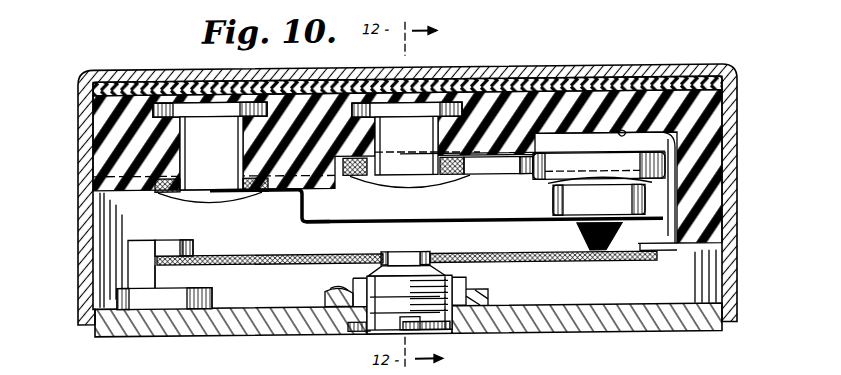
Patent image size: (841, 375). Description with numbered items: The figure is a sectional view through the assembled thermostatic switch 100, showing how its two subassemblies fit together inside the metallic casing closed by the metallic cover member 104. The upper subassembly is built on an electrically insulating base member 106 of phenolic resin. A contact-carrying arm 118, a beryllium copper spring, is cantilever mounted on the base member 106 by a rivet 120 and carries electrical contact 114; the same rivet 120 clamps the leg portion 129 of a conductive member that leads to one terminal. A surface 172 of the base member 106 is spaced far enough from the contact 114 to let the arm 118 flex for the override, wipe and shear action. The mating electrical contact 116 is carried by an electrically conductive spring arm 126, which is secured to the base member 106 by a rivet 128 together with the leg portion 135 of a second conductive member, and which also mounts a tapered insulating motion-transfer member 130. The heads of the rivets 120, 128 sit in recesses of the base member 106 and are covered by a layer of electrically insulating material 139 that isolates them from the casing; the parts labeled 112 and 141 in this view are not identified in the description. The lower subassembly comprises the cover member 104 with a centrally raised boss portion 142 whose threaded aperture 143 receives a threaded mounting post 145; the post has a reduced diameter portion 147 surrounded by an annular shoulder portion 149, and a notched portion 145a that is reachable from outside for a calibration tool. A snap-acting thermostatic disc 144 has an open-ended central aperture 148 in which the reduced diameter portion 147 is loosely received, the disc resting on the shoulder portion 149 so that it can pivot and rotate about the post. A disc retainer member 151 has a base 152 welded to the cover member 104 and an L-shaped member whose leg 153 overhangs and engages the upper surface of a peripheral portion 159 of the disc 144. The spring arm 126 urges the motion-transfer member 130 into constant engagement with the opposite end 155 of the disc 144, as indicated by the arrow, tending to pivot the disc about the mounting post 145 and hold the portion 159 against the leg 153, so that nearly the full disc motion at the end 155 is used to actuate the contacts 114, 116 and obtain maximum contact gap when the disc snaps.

The switch 100 is at (431, 168).
The cover member 104 is at (197, 326).
The base member 106 is at (96, 148).
The housing shell 112 is at (727, 123).
The electrical contact 114 is at (546, 185).
The electrical contact 116 is at (560, 212).
The contact-carrying arm 118 is at (484, 170).
The rivet 120 is at (424, 140).
The spring arm 126 is at (396, 223).
The rivet 128 is at (224, 150).
The leg portion 129 is at (357, 179).
The motion-transfer member 130 is at (576, 241).
The leg portion 135 is at (253, 187).
The layer of electrically insulating material 139 is at (548, 93).
The terminal flange 141 is at (205, 105).
The boss portion 142 is at (463, 294).
The threaded aperture 143 is at (352, 333).
The snap-acting thermostatic disc 144 is at (552, 267).
The threaded mounting post 145 is at (346, 303).
The notched portion 145a is at (418, 336).
The reduced diameter portion 147 is at (405, 255).
The aperture 148 is at (384, 258).
The shoulder portion 149 is at (434, 256).
The disc retainer member 151 is at (142, 264).
The base 152 is at (210, 304).
The leg 153 is at (196, 252).
The opposite end 155 is at (672, 251).
The portion of the disc 159 is at (176, 254).
The surface 172 is at (622, 135).